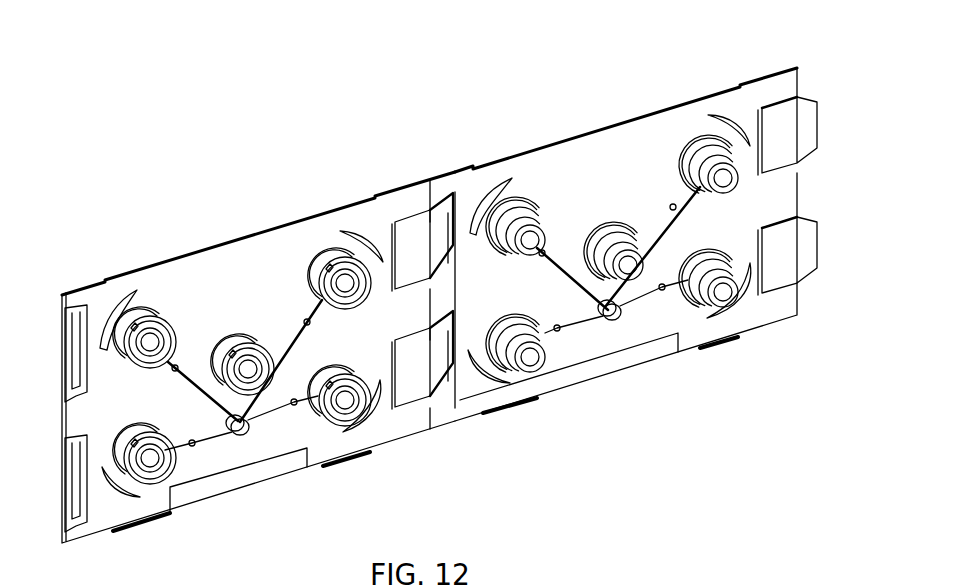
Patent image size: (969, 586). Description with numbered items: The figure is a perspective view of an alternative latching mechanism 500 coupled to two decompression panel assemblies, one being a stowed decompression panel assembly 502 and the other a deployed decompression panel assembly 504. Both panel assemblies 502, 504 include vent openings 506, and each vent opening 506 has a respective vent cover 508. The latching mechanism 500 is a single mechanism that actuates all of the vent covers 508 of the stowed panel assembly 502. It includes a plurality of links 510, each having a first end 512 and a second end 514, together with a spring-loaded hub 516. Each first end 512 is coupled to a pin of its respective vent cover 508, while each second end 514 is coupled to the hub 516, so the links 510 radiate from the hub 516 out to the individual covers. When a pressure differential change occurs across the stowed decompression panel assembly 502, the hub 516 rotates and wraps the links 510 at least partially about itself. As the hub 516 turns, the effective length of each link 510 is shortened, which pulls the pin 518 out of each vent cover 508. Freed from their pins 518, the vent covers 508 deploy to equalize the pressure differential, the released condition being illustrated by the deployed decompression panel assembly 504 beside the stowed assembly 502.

The latching mechanism 500 is at (186, 352).
The stowed decompression panel assembly 502 is at (333, 188).
The deployed decompression panel assembly 504 is at (703, 72).
The vent opening 506 is at (326, 383).
The vent cover 508 is at (368, 425).
The link 510 is at (304, 323).
The first end 512 is at (307, 318).
The second end 514 is at (211, 393).
The spring-loaded hub 516 is at (248, 437).
The pin 518 is at (180, 512).